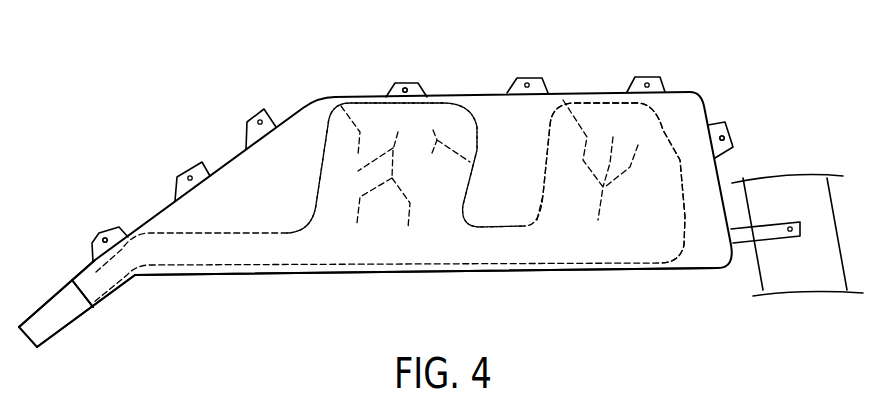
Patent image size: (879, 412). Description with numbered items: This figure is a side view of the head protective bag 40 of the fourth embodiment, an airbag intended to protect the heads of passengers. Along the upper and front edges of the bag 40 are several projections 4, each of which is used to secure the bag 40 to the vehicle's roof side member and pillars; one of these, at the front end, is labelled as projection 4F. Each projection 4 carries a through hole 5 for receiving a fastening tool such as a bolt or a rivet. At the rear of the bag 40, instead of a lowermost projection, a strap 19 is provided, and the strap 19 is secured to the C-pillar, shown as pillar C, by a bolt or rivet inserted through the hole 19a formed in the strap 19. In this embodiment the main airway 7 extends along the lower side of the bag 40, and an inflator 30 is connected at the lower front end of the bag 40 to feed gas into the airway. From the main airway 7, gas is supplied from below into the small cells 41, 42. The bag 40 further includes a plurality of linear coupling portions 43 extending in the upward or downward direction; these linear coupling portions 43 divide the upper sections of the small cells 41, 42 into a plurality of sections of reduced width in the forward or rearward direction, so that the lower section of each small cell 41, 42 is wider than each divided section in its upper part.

The projection 4 is at (203, 162).
The front mounting bracket 4F is at (118, 228).
The through hole 5 is at (103, 238).
The main airway 7 is at (235, 263).
The strap 19 is at (773, 240).
The hole 19a is at (790, 226).
The inflator 30 is at (47, 332).
The bag 40 is at (586, 80).
The small cell 41 is at (425, 240).
The small cell 42 is at (588, 253).
The linear coupling portion 43 is at (339, 104).
The pillar C is at (827, 283).